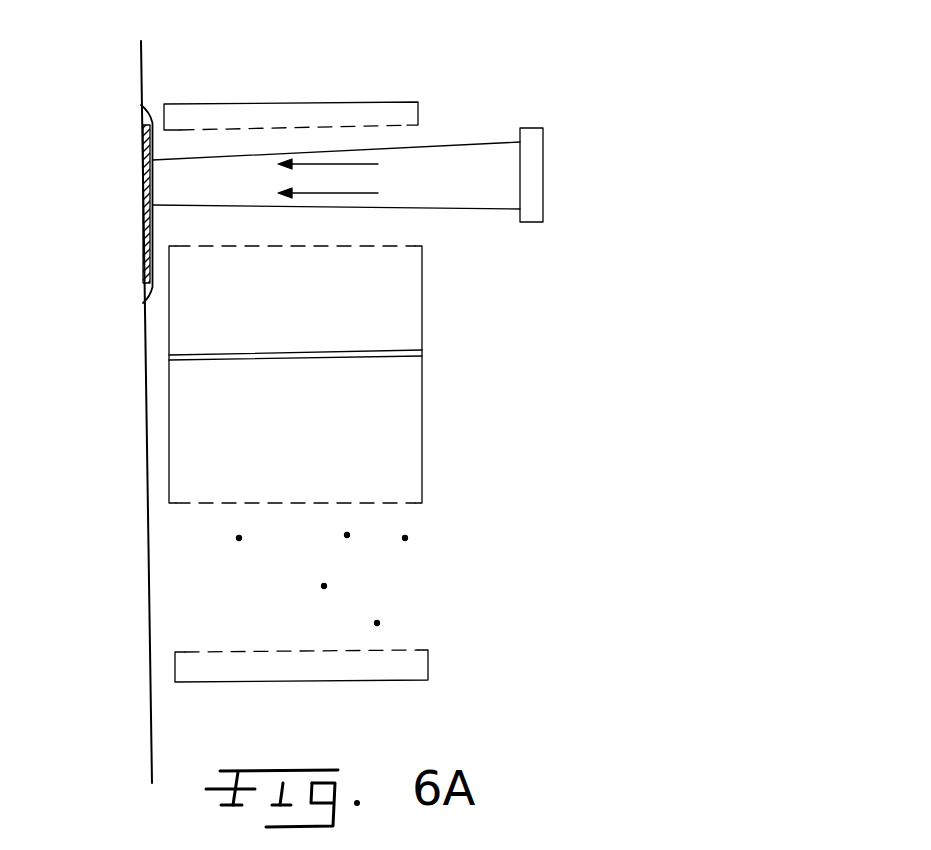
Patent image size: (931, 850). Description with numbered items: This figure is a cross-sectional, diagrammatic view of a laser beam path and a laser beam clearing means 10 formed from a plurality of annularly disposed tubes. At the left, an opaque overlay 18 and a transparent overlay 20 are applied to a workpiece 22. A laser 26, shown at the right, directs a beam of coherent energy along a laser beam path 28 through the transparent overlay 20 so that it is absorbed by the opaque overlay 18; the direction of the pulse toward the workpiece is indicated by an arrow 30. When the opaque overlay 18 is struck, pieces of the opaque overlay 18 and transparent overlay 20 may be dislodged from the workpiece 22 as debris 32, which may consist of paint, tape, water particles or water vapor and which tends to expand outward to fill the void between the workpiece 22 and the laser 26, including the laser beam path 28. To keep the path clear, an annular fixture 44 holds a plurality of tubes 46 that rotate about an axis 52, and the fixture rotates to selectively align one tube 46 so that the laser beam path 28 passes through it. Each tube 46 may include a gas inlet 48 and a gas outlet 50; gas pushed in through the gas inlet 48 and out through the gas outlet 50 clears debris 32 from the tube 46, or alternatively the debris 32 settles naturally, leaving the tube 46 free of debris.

The laser beam clearing means 10 is at (516, 95).
The opaque overlay 18 is at (146, 170).
The transparent overlay 20 is at (143, 120).
The workpiece 22 is at (141, 64).
The laser 26 is at (538, 222).
The laser beam path 28 is at (458, 200).
The arrow 30 is at (350, 163).
The debris 32 is at (239, 538).
The annular fixture 44 is at (422, 458).
The tube 46 is at (289, 136).
The gas inlet 48 is at (186, 626).
The gas outlet 50 is at (422, 525).
The axis 52 is at (422, 351).